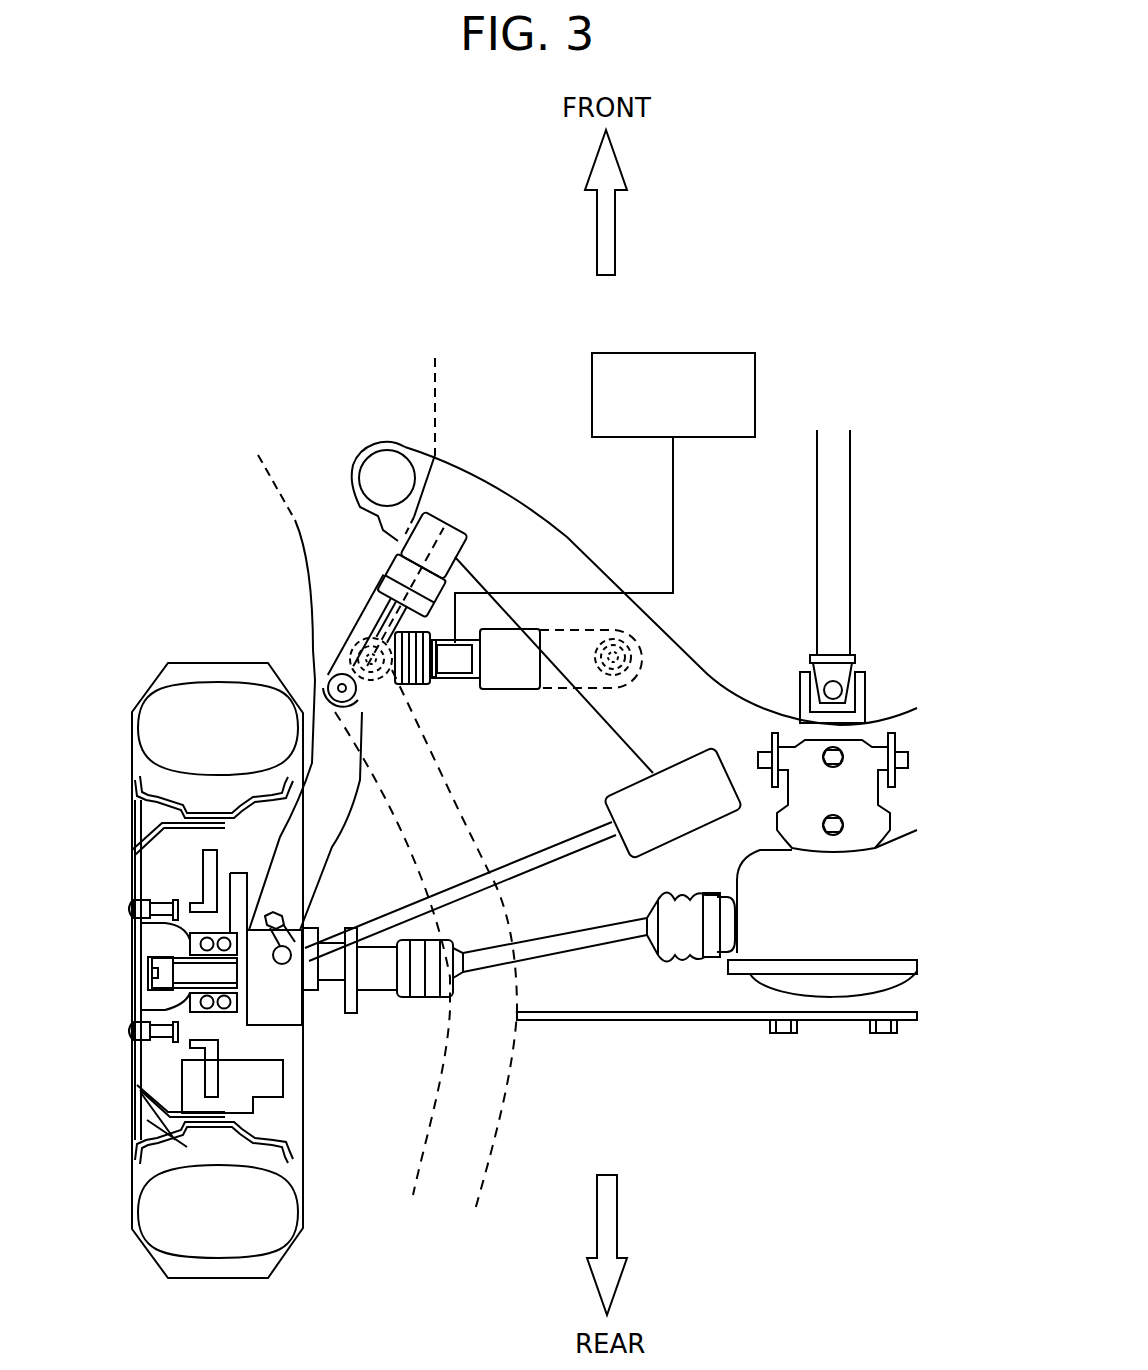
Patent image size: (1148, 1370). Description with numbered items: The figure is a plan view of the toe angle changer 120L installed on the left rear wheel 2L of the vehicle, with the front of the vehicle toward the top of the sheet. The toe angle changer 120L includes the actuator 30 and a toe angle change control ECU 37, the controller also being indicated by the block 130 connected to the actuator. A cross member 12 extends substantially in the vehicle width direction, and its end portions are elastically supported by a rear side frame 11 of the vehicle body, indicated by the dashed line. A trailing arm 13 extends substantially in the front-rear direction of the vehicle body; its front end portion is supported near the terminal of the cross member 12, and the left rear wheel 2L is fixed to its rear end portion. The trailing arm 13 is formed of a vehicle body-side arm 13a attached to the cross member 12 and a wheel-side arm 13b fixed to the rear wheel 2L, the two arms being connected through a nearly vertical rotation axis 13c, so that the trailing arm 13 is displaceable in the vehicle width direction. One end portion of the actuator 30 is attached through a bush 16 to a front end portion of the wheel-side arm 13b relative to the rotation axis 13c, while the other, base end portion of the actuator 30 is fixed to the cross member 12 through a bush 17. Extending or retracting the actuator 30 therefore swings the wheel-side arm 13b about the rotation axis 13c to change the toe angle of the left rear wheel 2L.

The toe angle changer 120L is at (324, 336).
The rear side frame 11 is at (435, 377).
The controller 130 is at (712, 353).
The left rear wheel 2L is at (187, 660).
The vehicle body-side arm 13a is at (397, 558).
The wheel-side arm 13b is at (307, 832).
The rotation axis 13c is at (328, 667).
The trailing arm 13 is at (327, 680).
The bush 16 is at (380, 685).
The cross member 12 is at (697, 683).
The actuator 30 is at (557, 630).
The toe angle change control ECU 37 is at (455, 688).
The bush 17 is at (633, 633).